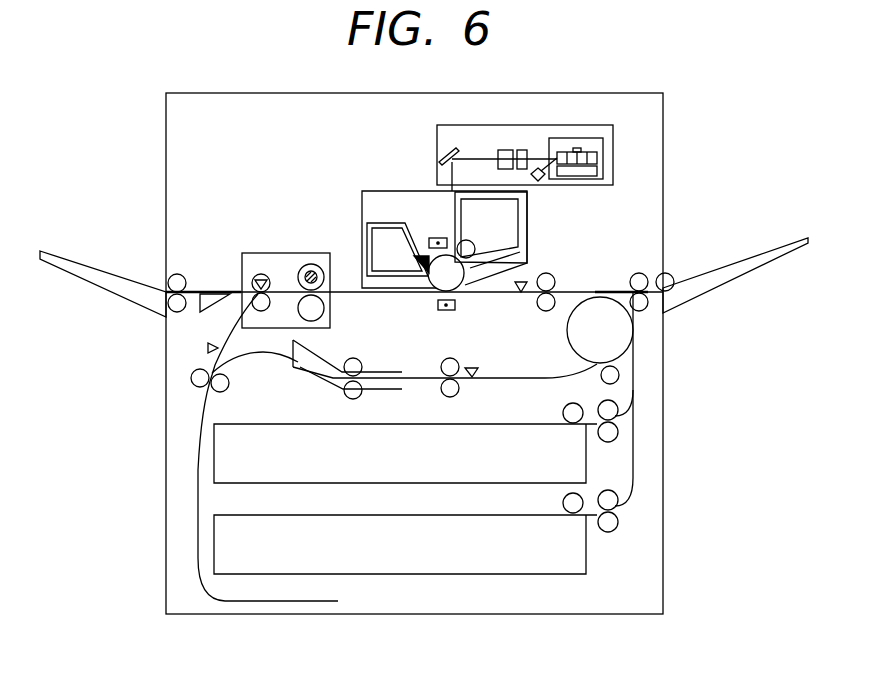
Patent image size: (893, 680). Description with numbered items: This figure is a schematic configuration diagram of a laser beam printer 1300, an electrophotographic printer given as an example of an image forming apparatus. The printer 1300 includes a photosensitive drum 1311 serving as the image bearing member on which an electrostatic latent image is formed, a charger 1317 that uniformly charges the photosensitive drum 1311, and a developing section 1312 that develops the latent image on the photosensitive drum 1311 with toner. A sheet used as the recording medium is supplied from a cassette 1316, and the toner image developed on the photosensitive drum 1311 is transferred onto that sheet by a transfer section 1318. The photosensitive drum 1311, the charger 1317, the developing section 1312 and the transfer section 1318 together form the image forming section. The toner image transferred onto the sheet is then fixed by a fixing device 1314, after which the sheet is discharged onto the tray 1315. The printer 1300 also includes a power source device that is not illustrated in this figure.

The laser beam printer 1300 is at (592, 93).
The photosensitive drum 1311 is at (464, 273).
The developing section 1312 is at (474, 243).
The fixing device 1314 is at (298, 253).
The tray 1315 is at (88, 267).
The cassette 1316 is at (573, 560).
The charger 1317 is at (434, 238).
The transfer section 1318 is at (455, 305).